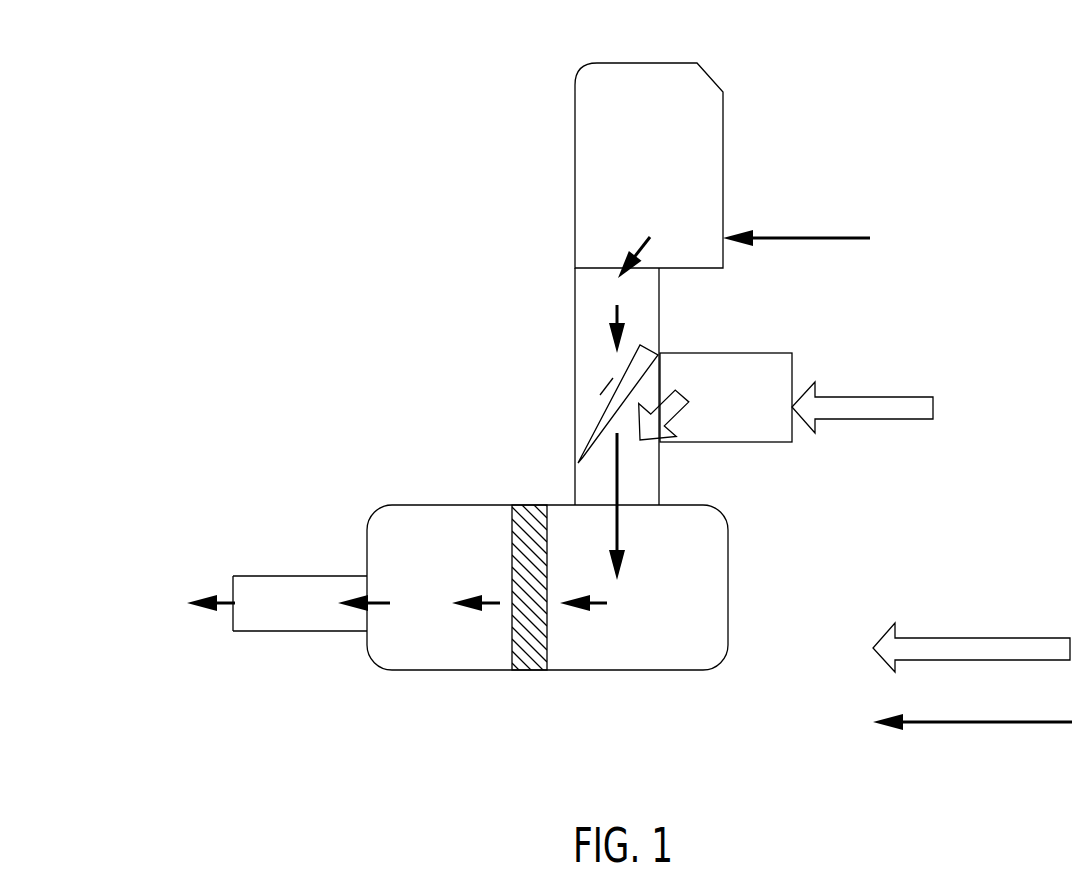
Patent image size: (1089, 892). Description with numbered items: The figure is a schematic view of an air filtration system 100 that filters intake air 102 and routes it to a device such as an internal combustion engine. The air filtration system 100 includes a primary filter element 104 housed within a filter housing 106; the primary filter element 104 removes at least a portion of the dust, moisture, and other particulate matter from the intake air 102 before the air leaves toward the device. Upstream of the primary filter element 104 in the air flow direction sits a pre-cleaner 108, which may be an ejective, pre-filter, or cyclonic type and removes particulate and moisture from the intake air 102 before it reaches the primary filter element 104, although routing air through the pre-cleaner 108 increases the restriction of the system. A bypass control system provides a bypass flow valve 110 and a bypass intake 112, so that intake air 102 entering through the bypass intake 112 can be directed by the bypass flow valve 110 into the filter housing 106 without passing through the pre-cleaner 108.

The air filtration system 100 is at (395, 54).
The intake air 102 is at (838, 232).
The primary filter element 104 is at (545, 650).
The filter housing 106 is at (683, 670).
The pre-cleaner 108 is at (592, 116).
The bypass flow valve 110 is at (613, 380).
The bypass intake 112 is at (780, 442).